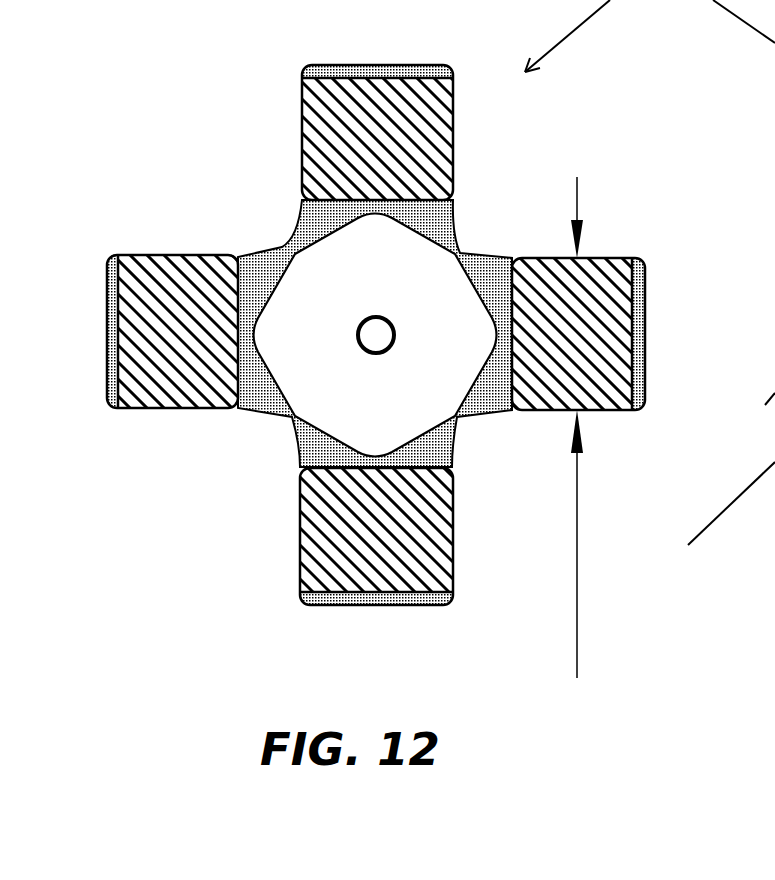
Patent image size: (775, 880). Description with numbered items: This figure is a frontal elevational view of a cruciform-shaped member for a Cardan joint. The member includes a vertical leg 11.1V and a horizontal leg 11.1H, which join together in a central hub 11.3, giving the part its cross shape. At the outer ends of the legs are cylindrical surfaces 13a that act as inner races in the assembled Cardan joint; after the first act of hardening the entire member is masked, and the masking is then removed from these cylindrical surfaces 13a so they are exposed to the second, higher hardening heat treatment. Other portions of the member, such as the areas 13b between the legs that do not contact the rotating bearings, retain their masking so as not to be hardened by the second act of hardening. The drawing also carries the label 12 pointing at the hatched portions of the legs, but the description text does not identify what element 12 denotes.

The vertical arm of hub 11.1V is at (330, 220).
The horizontal arm of hub 11.1H is at (253, 332).
The central opening 11.3 is at (470, 338).
The elastic block 12 is at (395, 551).
The first elastic element 13a is at (412, 138).
The second elastic element 13b is at (420, 397).